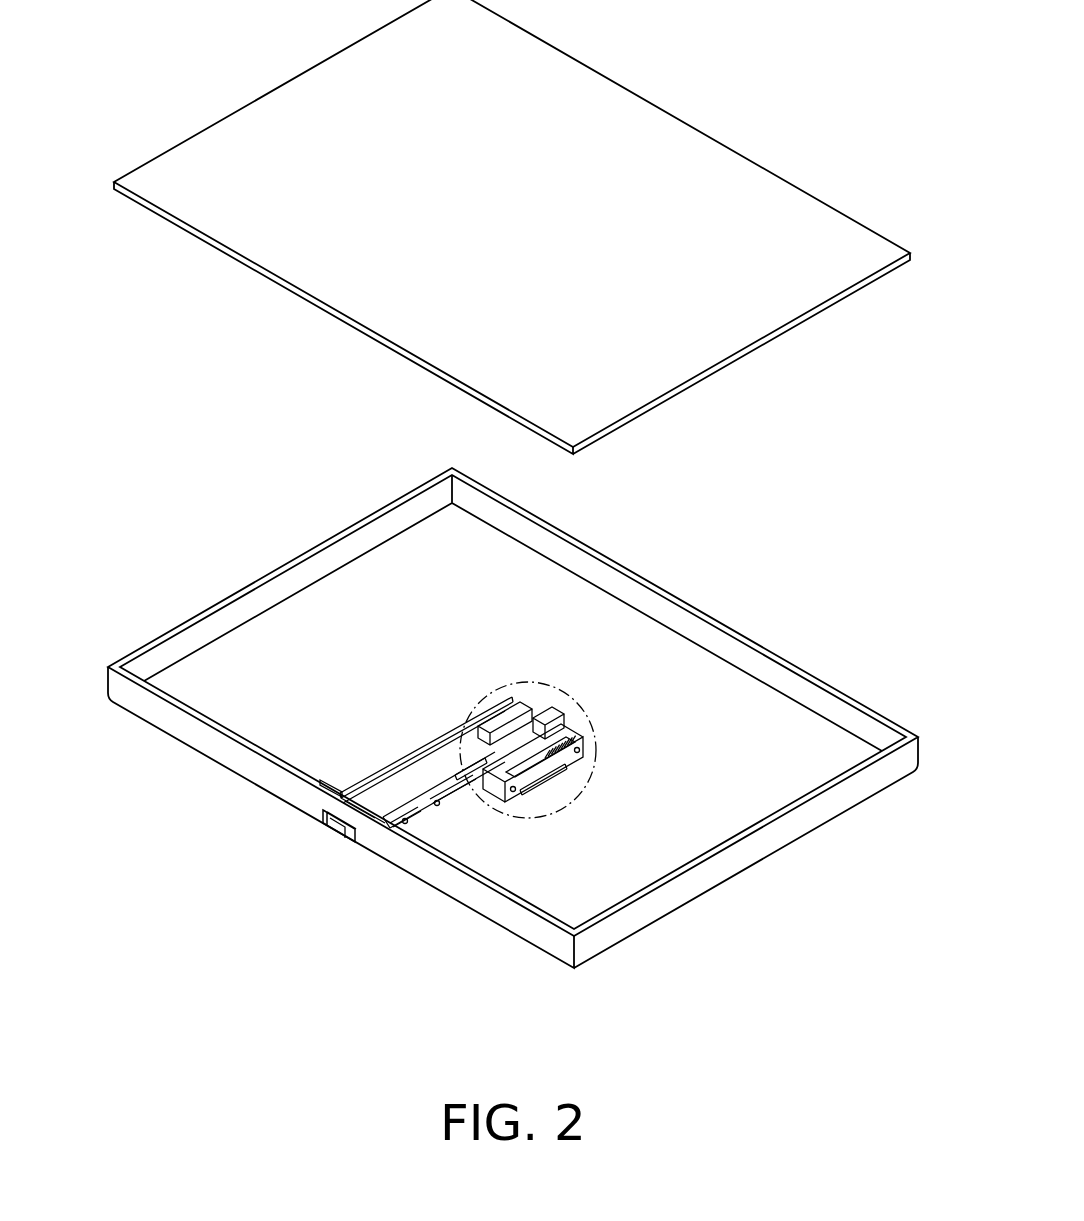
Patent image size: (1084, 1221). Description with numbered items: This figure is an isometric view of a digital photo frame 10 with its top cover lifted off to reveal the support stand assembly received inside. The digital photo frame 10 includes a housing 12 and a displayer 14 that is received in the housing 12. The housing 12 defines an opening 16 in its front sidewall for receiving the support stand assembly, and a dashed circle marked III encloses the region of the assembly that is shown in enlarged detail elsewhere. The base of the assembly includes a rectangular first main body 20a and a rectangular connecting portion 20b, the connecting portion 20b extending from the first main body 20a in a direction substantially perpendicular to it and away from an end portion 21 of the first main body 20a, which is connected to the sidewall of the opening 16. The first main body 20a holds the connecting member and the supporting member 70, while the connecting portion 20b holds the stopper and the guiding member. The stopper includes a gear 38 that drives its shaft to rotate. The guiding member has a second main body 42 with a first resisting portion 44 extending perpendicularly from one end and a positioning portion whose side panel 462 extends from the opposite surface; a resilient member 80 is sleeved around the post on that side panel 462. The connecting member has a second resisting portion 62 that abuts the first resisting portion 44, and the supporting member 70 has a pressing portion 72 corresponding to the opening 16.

The digital photo frame 10 is at (694, 441).
The housing 12 is at (513, 718).
The displayer 14 is at (625, 425).
The opening 16 is at (353, 845).
The first main body 20a is at (372, 785).
The connecting portion 20b is at (593, 747).
The end portion 21 is at (323, 793).
The gear 38 is at (515, 773).
The second main body 42 is at (468, 733).
The first resisting portion 44 is at (527, 713).
The second resisting portion 62 is at (500, 712).
The supporting member 70 is at (415, 772).
The pressing portion 72 is at (340, 827).
The resilient member 80 is at (565, 760).
The side panel 462 is at (537, 750).
The detail view circle III is at (565, 685).